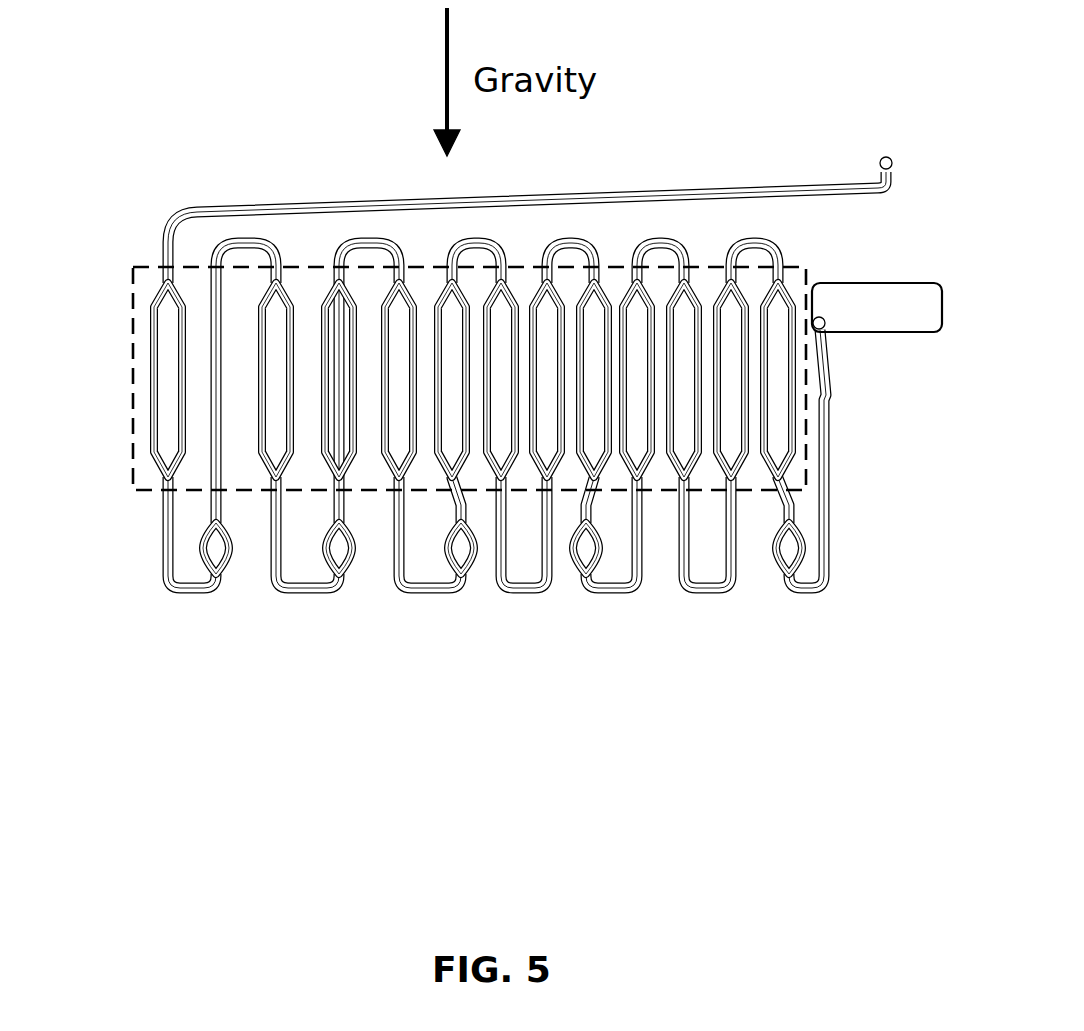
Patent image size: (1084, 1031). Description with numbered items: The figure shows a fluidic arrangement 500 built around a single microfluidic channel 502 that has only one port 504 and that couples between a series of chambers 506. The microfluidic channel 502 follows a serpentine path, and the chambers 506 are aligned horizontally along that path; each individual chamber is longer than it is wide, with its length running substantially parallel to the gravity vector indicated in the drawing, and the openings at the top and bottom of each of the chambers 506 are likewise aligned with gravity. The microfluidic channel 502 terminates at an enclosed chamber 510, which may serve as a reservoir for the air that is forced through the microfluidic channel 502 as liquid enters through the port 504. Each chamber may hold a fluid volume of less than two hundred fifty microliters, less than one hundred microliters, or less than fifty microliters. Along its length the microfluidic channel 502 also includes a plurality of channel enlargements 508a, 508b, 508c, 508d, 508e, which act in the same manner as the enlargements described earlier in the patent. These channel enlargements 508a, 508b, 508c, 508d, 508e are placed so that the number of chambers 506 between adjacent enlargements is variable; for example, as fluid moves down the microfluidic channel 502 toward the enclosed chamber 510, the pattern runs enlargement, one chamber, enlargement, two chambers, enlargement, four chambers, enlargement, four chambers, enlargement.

The fluidic arrangement 500 is at (492, 348).
The microfluidic channel 502 is at (645, 197).
The port 504 is at (886, 156).
The chambers 506 is at (131, 388).
The channel enlargement 508a is at (226, 553).
The channel enlargement 508b is at (349, 553).
The channel enlargement 508c is at (470, 553).
The channel enlargement 508d is at (595, 553).
The channel enlargement 508e is at (798, 553).
The enclosed chamber 510 is at (925, 332).